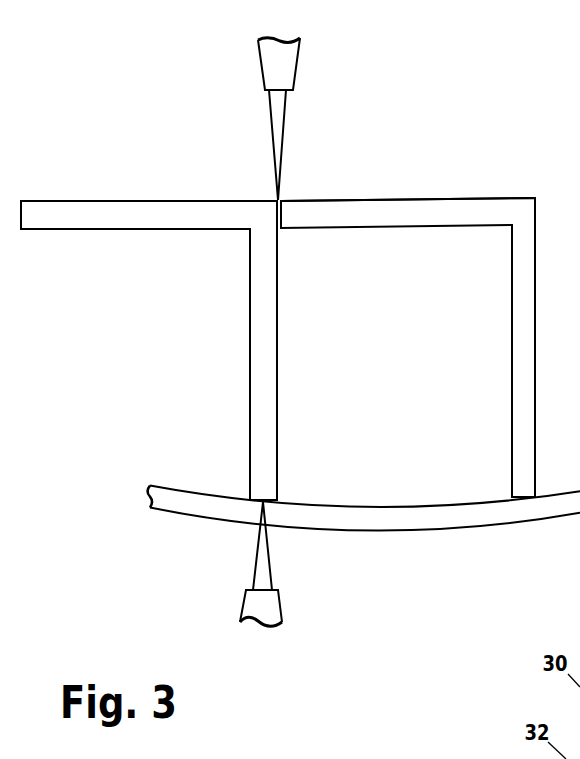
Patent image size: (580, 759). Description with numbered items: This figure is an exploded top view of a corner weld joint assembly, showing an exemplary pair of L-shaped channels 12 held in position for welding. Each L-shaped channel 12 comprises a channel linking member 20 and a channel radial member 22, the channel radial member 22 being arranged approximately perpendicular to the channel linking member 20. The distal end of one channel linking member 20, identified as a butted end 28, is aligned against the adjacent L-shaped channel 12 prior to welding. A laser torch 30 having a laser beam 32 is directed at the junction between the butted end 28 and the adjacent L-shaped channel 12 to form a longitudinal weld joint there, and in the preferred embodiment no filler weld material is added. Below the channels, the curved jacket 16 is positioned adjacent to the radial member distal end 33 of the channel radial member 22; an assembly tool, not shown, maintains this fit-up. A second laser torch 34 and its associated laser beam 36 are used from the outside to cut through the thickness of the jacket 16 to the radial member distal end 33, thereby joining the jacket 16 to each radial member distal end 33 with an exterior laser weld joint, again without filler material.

The L-shaped channel 12 is at (75, 210).
The jacket 16 is at (396, 517).
The channel linking member 20 is at (118, 217).
The channel radial member 22 is at (520, 322).
The butted end 28 is at (283, 213).
The laser torch 30 is at (270, 65).
The laser beam 32 is at (277, 143).
The radial member distal end 33 is at (260, 490).
The laser torch 34 is at (268, 605).
The laser beam 36 is at (264, 552).